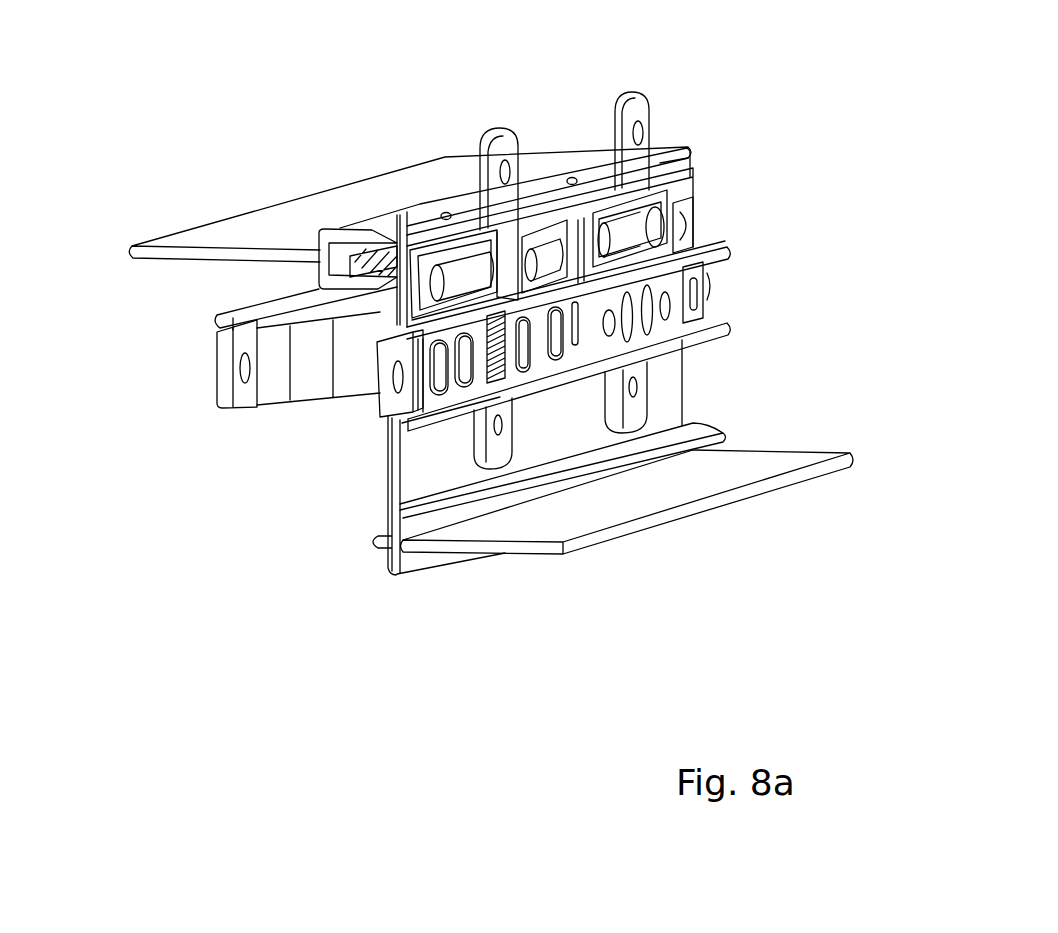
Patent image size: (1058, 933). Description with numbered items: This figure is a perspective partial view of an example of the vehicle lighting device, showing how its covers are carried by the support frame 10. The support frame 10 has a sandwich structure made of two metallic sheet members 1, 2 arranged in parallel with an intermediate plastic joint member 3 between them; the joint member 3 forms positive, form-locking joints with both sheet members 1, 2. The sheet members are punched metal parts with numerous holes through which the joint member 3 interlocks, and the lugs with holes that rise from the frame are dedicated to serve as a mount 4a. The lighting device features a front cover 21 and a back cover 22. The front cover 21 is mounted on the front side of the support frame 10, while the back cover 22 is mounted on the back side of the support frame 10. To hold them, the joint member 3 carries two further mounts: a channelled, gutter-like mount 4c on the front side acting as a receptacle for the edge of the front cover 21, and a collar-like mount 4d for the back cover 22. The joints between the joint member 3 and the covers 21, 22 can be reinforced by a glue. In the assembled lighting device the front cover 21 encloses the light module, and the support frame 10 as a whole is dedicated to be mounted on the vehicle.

The first sheet member 1 is at (380, 410).
The second sheet member 2 is at (221, 370).
The joint member 3 is at (313, 368).
The mount 4a is at (521, 176).
The gutter-like mount 4c is at (392, 547).
The collar-like mount 4d is at (352, 262).
The support frame 10 is at (744, 221).
The front cover 21 is at (758, 470).
The back cover 22 is at (223, 239).